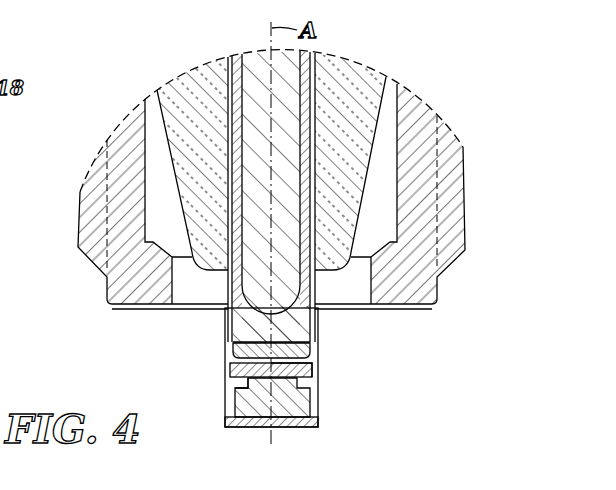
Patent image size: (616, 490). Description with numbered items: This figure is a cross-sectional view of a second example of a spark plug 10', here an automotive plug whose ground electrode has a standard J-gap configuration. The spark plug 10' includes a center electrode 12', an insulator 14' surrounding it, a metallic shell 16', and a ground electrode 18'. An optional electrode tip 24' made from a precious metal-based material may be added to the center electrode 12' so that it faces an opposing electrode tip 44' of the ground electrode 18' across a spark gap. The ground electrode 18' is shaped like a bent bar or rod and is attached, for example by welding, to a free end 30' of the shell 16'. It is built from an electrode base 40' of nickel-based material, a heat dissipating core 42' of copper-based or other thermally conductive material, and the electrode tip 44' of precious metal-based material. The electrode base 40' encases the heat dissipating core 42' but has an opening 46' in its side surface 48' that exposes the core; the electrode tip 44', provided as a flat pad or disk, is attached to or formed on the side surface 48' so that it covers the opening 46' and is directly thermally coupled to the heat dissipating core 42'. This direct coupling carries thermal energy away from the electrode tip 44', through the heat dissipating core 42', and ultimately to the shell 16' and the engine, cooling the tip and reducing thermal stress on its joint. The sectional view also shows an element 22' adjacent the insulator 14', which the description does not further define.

The spark plug 10' is at (280, 105).
The center electrode 12' is at (239, 196).
The insulator 14' is at (143, 163).
The metallic shell 16' is at (242, 198).
The ground electrode 18' is at (308, 199).
The seal ring 22' is at (399, 183).
The electrode tip 24' is at (233, 350).
The free end 30' is at (260, 335).
The electrode base 40' is at (232, 401).
The heat dissipating core 42' is at (307, 367).
The electrode tip 44' is at (227, 380).
The opening 46' is at (224, 422).
The side surface 48' is at (325, 367).